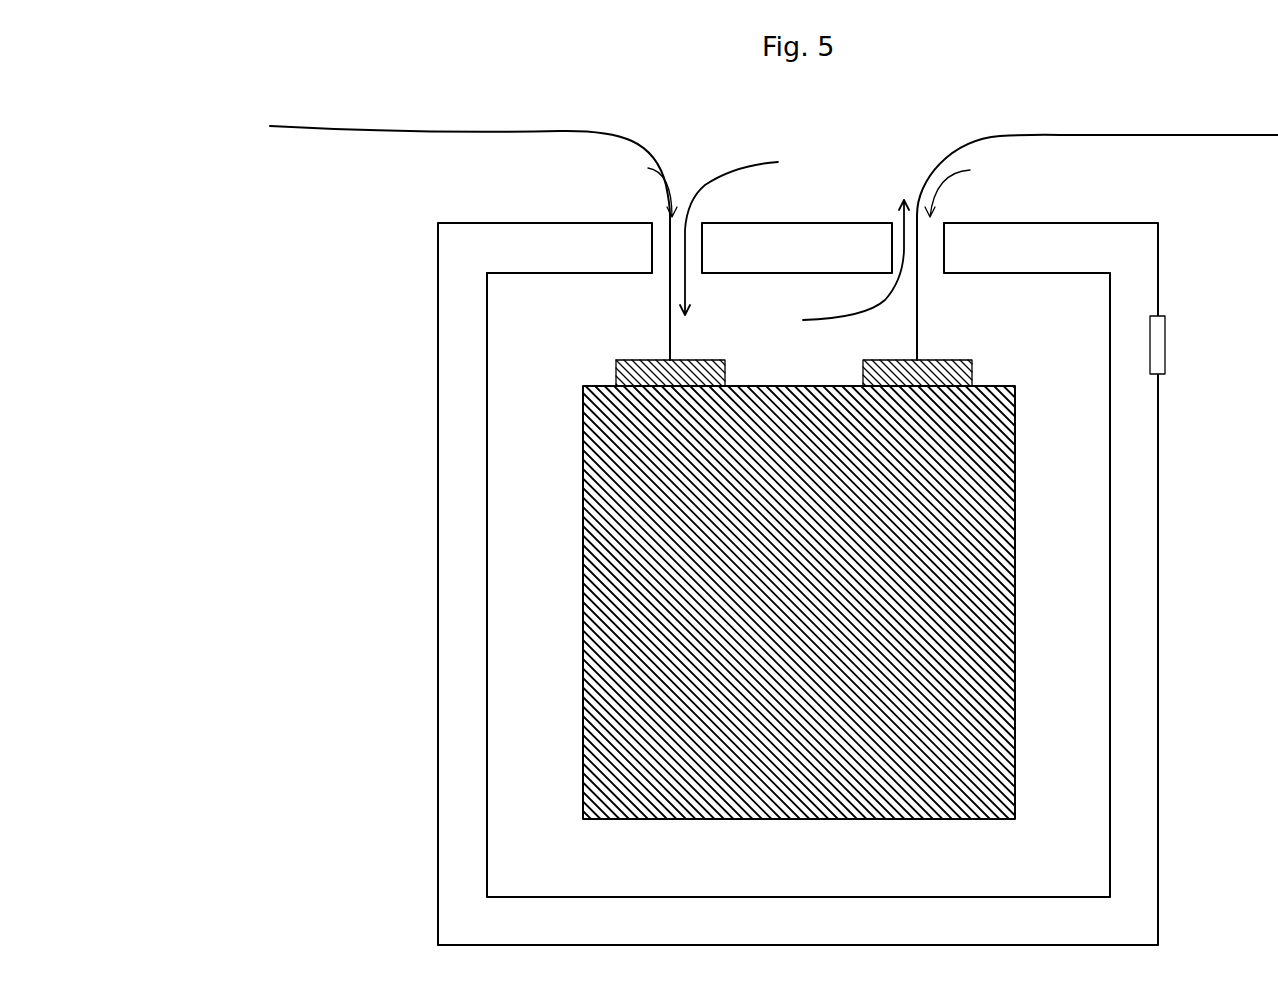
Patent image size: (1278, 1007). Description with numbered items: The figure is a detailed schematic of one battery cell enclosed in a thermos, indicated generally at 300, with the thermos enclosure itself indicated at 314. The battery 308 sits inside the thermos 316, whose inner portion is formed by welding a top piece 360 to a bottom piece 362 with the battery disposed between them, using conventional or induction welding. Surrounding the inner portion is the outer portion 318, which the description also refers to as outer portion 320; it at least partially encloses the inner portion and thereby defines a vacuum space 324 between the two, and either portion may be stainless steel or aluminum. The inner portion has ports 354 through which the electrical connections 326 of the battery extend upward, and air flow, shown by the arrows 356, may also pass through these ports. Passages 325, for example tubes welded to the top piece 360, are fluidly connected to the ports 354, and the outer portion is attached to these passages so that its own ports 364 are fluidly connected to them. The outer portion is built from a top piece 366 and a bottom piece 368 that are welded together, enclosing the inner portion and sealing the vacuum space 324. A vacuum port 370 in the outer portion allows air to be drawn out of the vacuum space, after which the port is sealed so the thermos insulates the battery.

The battery system 300 is at (217, 119).
The battery 308 is at (862, 775).
The housing 314 is at (292, 297).
The thermos 316 is at (1110, 393).
The outer portion 318 is at (1158, 462).
The outer portion 320 is at (568, 868).
The vacuum space 324 is at (568, 936).
The passages 325 is at (652, 250).
The electrical connections 326 is at (438, 127).
The ports 354 is at (667, 282).
The arrows indicating air flow 356 is at (762, 160).
The top piece of inner portion 360 is at (592, 273).
The bottom piece of inner portion 362 is at (720, 897).
The ports 364 is at (808, 185).
The top piece of outer portion 366 is at (1060, 224).
The bottom piece of outer portion 368 is at (985, 945).
The vacuum port 370 is at (1160, 335).